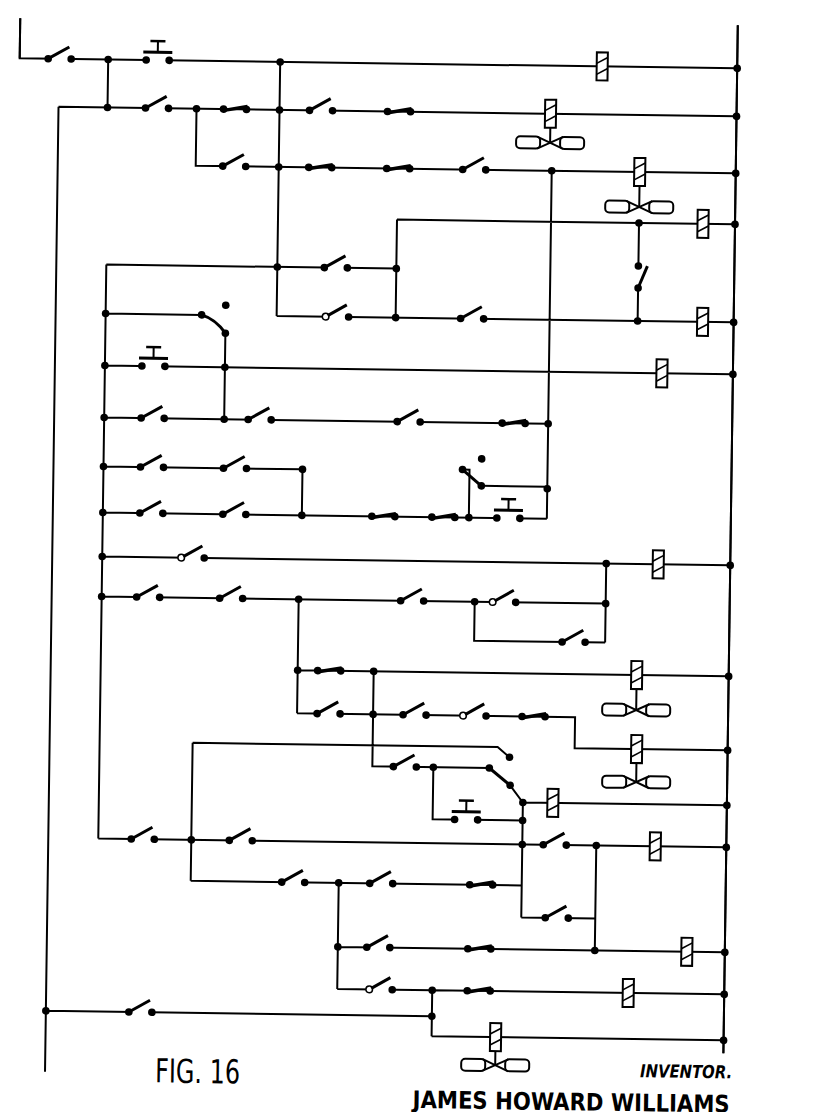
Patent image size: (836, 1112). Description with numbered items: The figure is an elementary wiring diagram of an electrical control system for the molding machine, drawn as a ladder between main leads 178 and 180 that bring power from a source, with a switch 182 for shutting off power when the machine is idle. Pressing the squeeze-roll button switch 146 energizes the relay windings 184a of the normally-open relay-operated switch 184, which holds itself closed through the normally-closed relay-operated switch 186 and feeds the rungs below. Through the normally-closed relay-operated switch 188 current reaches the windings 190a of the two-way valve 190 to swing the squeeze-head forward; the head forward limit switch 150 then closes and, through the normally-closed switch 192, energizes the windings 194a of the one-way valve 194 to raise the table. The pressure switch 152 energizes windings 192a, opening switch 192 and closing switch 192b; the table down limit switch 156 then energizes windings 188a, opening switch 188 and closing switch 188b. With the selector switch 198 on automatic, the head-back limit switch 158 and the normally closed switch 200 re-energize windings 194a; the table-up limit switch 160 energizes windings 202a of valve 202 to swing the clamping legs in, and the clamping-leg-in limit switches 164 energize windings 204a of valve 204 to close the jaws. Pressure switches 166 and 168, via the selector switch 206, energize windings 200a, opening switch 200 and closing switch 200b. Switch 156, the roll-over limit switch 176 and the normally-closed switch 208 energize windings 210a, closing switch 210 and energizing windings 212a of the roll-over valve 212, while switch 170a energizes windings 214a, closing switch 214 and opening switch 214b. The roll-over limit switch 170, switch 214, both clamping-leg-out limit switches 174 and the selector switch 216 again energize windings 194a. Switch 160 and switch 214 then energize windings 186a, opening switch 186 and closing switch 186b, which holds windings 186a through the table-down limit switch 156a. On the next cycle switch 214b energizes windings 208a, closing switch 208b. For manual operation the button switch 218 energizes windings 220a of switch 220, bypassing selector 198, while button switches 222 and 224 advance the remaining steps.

The main lead 178 is at (21, 36).
The main lead 180 is at (739, 47).
The switch 182 is at (69, 46).
The squeeze-roll button switch 146 is at (168, 40).
The normally-open relay-operated switch 184 is at (163, 95).
The normally-closed relay-operated switch 186 is at (243, 101).
The table-down limit switch 156a is at (240, 152).
The normally-closed relay-operated switch 188 is at (402, 101).
The normally-closed relay-operated switch 192 is at (401, 158).
The head forward limit switch 150 is at (479, 156).
The relay windings 184a is at (609, 50).
The relay windings 190a is at (559, 104).
The relay-operated two-way valve 190 is at (560, 134).
The relay windings 194a is at (648, 156).
The relay-operated one-way valve 194 is at (647, 197).
The relay windings 192a is at (730, 202).
The normally-open relay-operated switch 188b is at (650, 275).
The relay windings 188a is at (714, 316).
The relay windings 220a is at (690, 347).
The pressure switch 152 is at (337, 257).
The selector switch 198 is at (205, 309).
The button switch 218 is at (162, 348).
The normally-open switch 192b is at (338, 308).
The table down limit switch 156 is at (478, 307).
The normally-open relay-operated switch 220 is at (156, 410).
The head-back limit switch 158 is at (414, 409).
The normally closed relay-operated switch 200 is at (518, 412).
The roll-over limit switch 170 is at (158, 459).
The relay-operated switch 214 is at (246, 459).
The roll-over limit switch 176 is at (158, 505).
The normally-open switch 208b is at (246, 505).
The clamping-leg-out limit switches 174 is at (386, 508).
The selector switch 216 is at (465, 460).
The button switch 224 is at (529, 505).
The normally-open switch 186b is at (206, 548).
The relay windings 186a is at (670, 548).
The table-up limit switch 160 is at (246, 589).
The pressure switch 166 is at (341, 703).
The clamping-leg-in limit switches 164 is at (429, 703).
The relay windings 202a is at (651, 660).
The relay-operated two-way valve 202 is at (650, 696).
The relay windings 204a is at (652, 734).
The relay-operated two-way valve 204 is at (652, 771).
The pressure switch 168 is at (420, 752).
The selector switch 206 is at (498, 777).
The button switch 222 is at (470, 798).
The relay windings 200a is at (566, 790).
The relay windings 208a is at (670, 823).
The switch 200b is at (160, 830).
The normally-closed switch 214b is at (496, 873).
The roll-over limit switch 170a is at (397, 933).
The normally-closed relay-operated switch 208 is at (493, 938).
The relay windings 214a is at (699, 926).
The relay windings 210a is at (648, 982).
The relay windings 212a is at (516, 1029).
The relay-operated two-way valve 212 is at (505, 1056).
The normally-open relay-operated switch 210 is at (152, 1001).